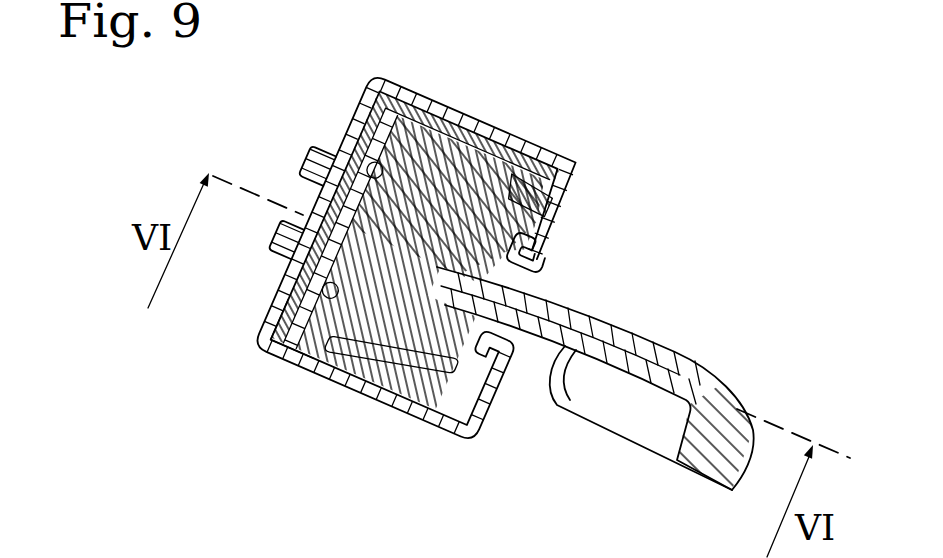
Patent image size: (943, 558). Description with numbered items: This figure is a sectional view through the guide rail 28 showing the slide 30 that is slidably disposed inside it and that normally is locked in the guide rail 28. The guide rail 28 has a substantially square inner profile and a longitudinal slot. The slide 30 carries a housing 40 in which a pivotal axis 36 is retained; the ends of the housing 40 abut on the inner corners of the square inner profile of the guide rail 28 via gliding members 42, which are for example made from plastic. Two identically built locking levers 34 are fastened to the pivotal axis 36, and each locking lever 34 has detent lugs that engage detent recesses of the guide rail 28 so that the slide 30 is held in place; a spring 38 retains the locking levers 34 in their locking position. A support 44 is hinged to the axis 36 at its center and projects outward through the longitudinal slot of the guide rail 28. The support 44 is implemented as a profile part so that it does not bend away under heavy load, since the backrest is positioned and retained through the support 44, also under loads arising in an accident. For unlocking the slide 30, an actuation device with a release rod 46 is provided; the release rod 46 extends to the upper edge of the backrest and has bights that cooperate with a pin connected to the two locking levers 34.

The guide rail 28 is at (353, 110).
The slide 30 is at (354, 159).
The locking lever 34 is at (556, 257).
The pivotal axis 36 is at (268, 340).
The spring 38 is at (493, 162).
The housing 40 is at (432, 373).
The gliding member 42 is at (548, 192).
The support 44 is at (668, 348).
The release rod 46 is at (450, 110).